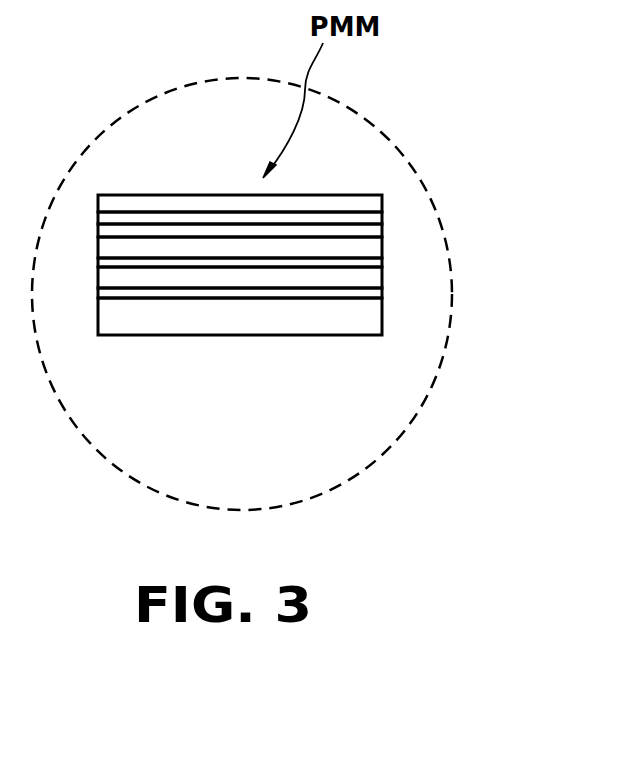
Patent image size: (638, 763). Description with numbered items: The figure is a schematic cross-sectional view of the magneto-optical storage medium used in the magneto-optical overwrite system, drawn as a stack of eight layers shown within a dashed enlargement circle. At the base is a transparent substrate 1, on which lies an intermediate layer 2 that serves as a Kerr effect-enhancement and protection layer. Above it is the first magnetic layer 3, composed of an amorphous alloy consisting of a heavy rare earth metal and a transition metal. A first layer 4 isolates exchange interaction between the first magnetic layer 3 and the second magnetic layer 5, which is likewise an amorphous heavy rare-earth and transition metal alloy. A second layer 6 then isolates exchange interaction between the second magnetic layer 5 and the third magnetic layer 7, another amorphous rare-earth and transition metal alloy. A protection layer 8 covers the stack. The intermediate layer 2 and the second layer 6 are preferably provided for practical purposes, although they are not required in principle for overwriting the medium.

The transparent substrate 1 is at (382, 325).
The intermediate layer 2 is at (382, 298).
The first magnetic layer 3 is at (382, 277).
The first layer for isolating exchange interaction 4 is at (382, 260).
The second magnetic layer 5 is at (382, 250).
The second layer for isolating exchange interaction 6 is at (382, 233).
The third magnetic layer 7 is at (382, 218).
The protection layer 8 is at (382, 203).